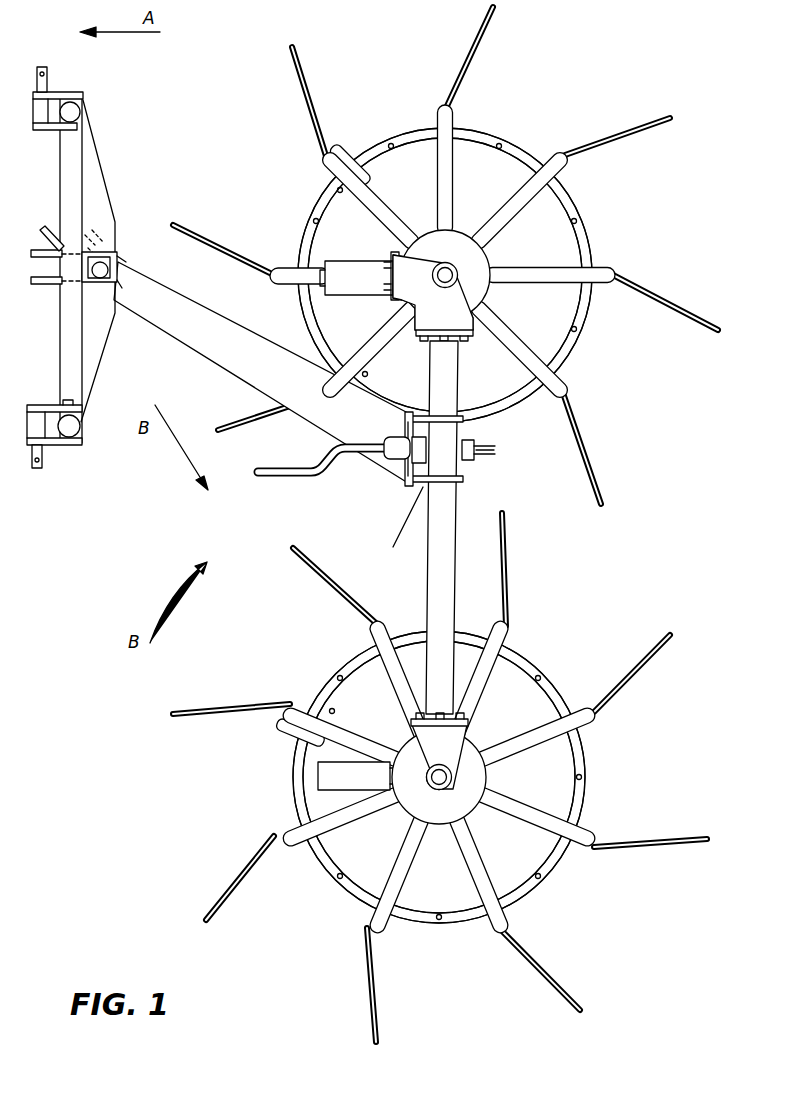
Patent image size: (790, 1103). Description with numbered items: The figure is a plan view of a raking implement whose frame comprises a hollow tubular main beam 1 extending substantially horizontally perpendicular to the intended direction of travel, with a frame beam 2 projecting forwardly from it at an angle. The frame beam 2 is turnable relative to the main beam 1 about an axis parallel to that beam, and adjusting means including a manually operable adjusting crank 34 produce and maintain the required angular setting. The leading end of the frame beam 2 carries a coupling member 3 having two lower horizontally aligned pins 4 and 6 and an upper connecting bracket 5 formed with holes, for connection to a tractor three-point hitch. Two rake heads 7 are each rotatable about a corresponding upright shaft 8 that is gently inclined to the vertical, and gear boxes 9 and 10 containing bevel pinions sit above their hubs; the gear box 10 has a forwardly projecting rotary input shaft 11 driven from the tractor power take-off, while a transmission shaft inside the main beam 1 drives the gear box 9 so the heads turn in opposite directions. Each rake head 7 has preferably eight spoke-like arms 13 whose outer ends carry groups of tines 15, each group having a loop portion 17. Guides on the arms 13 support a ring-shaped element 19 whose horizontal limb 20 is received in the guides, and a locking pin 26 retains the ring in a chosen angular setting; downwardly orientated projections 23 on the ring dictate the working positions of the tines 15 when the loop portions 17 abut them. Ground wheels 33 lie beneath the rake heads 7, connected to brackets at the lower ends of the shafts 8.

The main beam 1 is at (429, 590).
The frame beam 2 is at (178, 336).
The coupling member 3 is at (80, 184).
The lower pin 4 is at (46, 460).
The upper connecting bracket 5 is at (55, 284).
The lower pin 6 is at (49, 85).
The rake head 7 is at (528, 139).
The upright shaft 8 is at (448, 267).
The gear box 9 is at (462, 735).
The gear box 10 is at (480, 333).
The rotary input shaft 11 is at (380, 266).
The spoke-like arm 13 is at (500, 225).
The tines 15 is at (304, 89).
The loop portion 17 is at (526, 175).
The ring-shaped element 19 is at (594, 344).
The horizontal limb 20 is at (303, 318).
The projection 23 is at (340, 193).
The locking pin 26 is at (368, 177).
The ground wheel 33 is at (352, 294).
The adjusting crank 34 is at (299, 480).